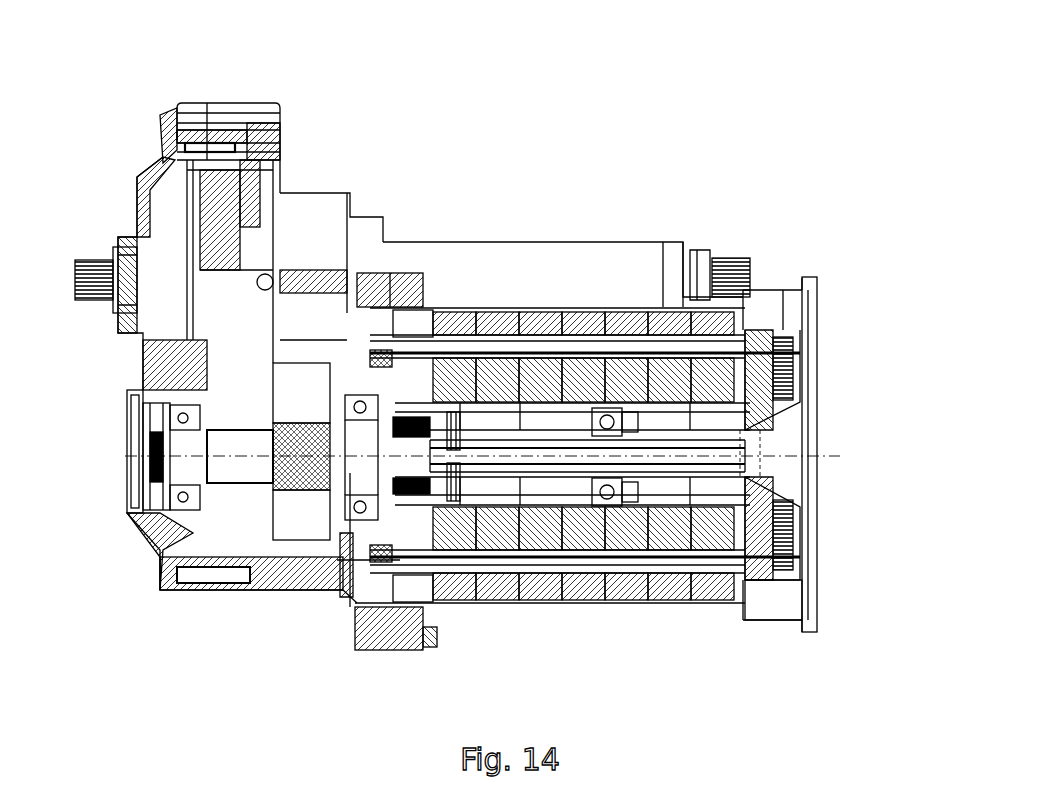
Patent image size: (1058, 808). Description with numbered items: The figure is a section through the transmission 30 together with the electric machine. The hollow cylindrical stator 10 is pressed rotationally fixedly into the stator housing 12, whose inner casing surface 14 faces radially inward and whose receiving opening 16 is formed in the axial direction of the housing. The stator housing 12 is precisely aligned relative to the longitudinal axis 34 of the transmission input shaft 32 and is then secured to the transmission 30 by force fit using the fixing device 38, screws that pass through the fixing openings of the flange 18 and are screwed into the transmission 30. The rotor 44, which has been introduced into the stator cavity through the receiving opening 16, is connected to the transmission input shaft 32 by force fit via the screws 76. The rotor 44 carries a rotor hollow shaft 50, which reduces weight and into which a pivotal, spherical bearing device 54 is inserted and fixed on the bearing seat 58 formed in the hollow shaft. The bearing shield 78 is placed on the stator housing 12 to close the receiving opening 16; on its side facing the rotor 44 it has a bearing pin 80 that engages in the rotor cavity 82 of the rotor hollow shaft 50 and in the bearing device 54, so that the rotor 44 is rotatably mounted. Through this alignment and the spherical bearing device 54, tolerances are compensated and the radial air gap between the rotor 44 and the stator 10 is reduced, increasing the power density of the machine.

The stator 10 is at (584, 597).
The stator housing 12 is at (776, 290).
The inner casing surface 14 is at (520, 597).
The receiving opening 16 is at (767, 590).
The flange 18 is at (395, 627).
The transmission 30 is at (247, 112).
The transmission input shaft 32 is at (225, 465).
The longitudinal axis 34 is at (122, 457).
The fixing device 38 is at (425, 635).
The rotor 44 is at (511, 376).
The rotor hollow shaft 50 is at (640, 605).
The bearing device 54 is at (648, 382).
The bearing seat 58 is at (616, 340).
The screws 76 is at (438, 424).
The bearing shield 78 is at (820, 296).
The bearing pin 80 is at (711, 460).
The rotor cavity 82 is at (541, 440).